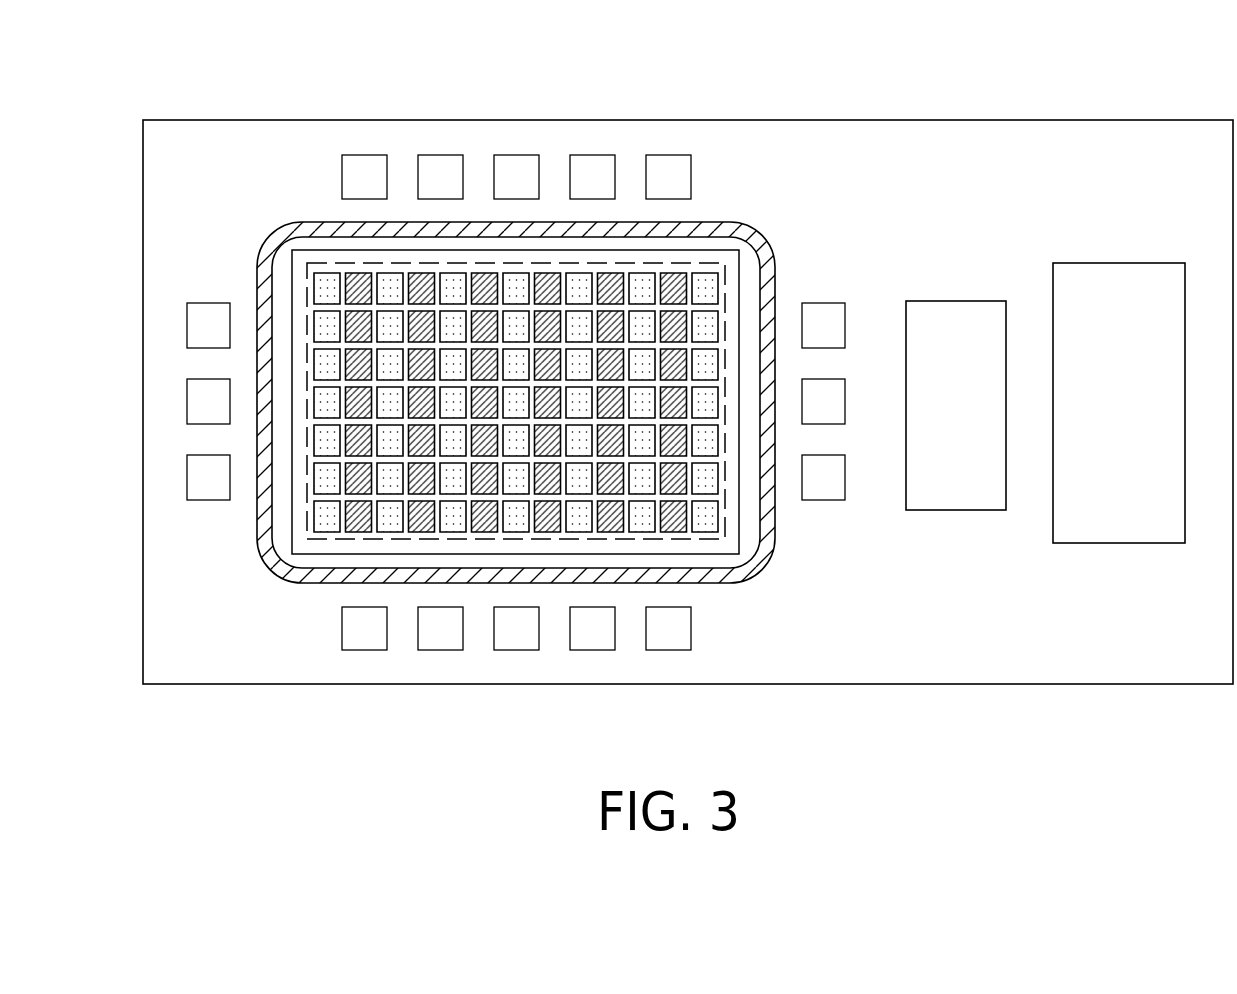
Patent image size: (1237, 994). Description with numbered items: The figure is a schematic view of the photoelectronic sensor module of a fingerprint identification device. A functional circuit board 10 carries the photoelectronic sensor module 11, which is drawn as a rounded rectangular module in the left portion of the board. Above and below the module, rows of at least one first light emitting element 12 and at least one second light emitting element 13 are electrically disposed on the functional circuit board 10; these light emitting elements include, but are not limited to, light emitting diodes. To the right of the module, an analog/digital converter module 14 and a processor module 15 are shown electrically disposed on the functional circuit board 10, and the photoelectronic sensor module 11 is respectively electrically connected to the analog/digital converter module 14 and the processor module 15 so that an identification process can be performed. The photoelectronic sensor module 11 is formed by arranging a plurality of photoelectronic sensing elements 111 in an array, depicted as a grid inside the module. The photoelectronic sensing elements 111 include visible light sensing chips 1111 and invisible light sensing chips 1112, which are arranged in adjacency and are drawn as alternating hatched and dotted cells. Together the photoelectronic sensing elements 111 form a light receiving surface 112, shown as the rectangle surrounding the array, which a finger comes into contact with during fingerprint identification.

The functional circuit board 10 is at (680, 135).
The photoelectronic sensor module 11 is at (776, 228).
The first light emitting element 12 is at (355, 177).
The second light emitting element 13 is at (355, 628).
The analog/digital converter module 14 is at (948, 318).
The processor module 15 is at (1112, 278).
The photoelectronic sensing elements 111 is at (638, 441).
The light receiving surface 112 is at (740, 307).
The visible light sensing chips 1111 is at (675, 525).
The invisible light sensing chips 1112 is at (710, 525).